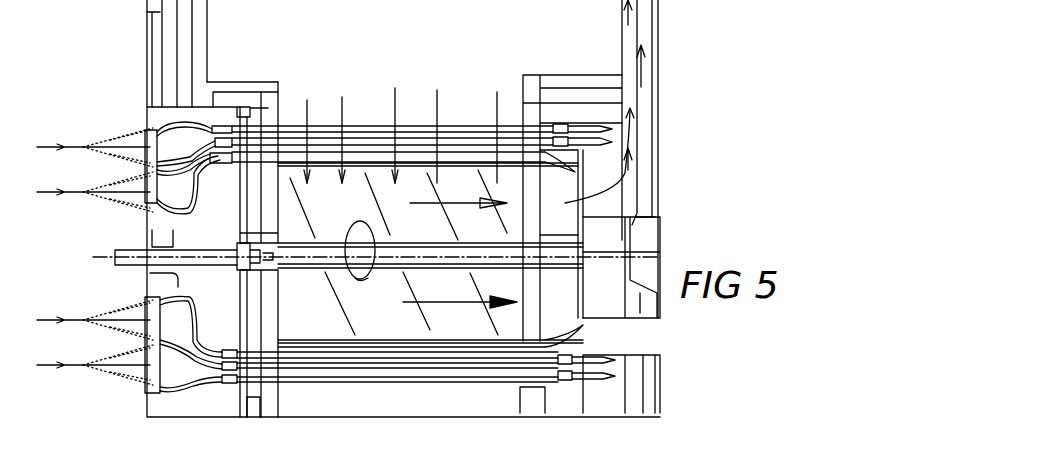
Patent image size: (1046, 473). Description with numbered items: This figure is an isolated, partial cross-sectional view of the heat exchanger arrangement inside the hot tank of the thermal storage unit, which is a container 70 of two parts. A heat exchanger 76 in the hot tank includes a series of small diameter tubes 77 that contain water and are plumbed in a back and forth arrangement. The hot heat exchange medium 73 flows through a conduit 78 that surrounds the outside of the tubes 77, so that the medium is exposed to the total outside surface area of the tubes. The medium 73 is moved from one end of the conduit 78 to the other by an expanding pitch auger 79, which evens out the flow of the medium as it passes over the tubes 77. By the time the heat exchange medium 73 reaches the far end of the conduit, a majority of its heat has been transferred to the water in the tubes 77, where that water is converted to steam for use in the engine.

The container 70 is at (857, 447).
The hot heat exchange medium 73 is at (640, 45).
The heat exchanger 76 is at (416, 80).
The small diameter tubes 77 is at (463, 127).
The conduit 78 is at (443, 217).
The expanding pitch auger 79 is at (343, 310).